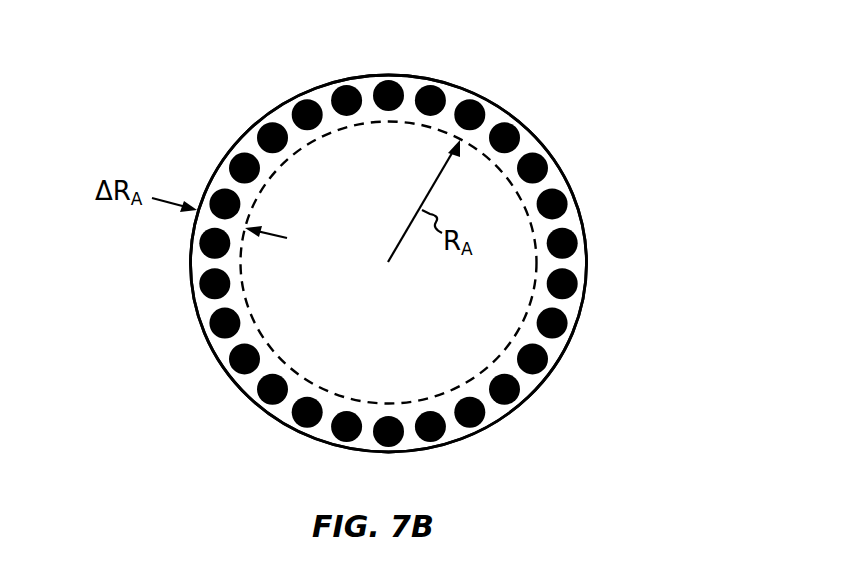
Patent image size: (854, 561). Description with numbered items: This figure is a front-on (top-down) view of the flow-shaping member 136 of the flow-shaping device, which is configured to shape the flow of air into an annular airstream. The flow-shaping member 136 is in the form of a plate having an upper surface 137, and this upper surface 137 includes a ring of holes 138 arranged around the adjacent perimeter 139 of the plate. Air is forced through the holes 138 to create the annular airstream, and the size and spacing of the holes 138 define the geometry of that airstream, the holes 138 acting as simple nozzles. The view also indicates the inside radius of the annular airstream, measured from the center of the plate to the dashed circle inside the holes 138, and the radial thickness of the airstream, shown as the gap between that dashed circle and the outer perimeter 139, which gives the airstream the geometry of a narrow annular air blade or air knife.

The flow-shaping member 136 is at (505, 80).
The upper surface 137 is at (536, 149).
The holes 138 is at (262, 124).
The perimeter 139 is at (588, 259).